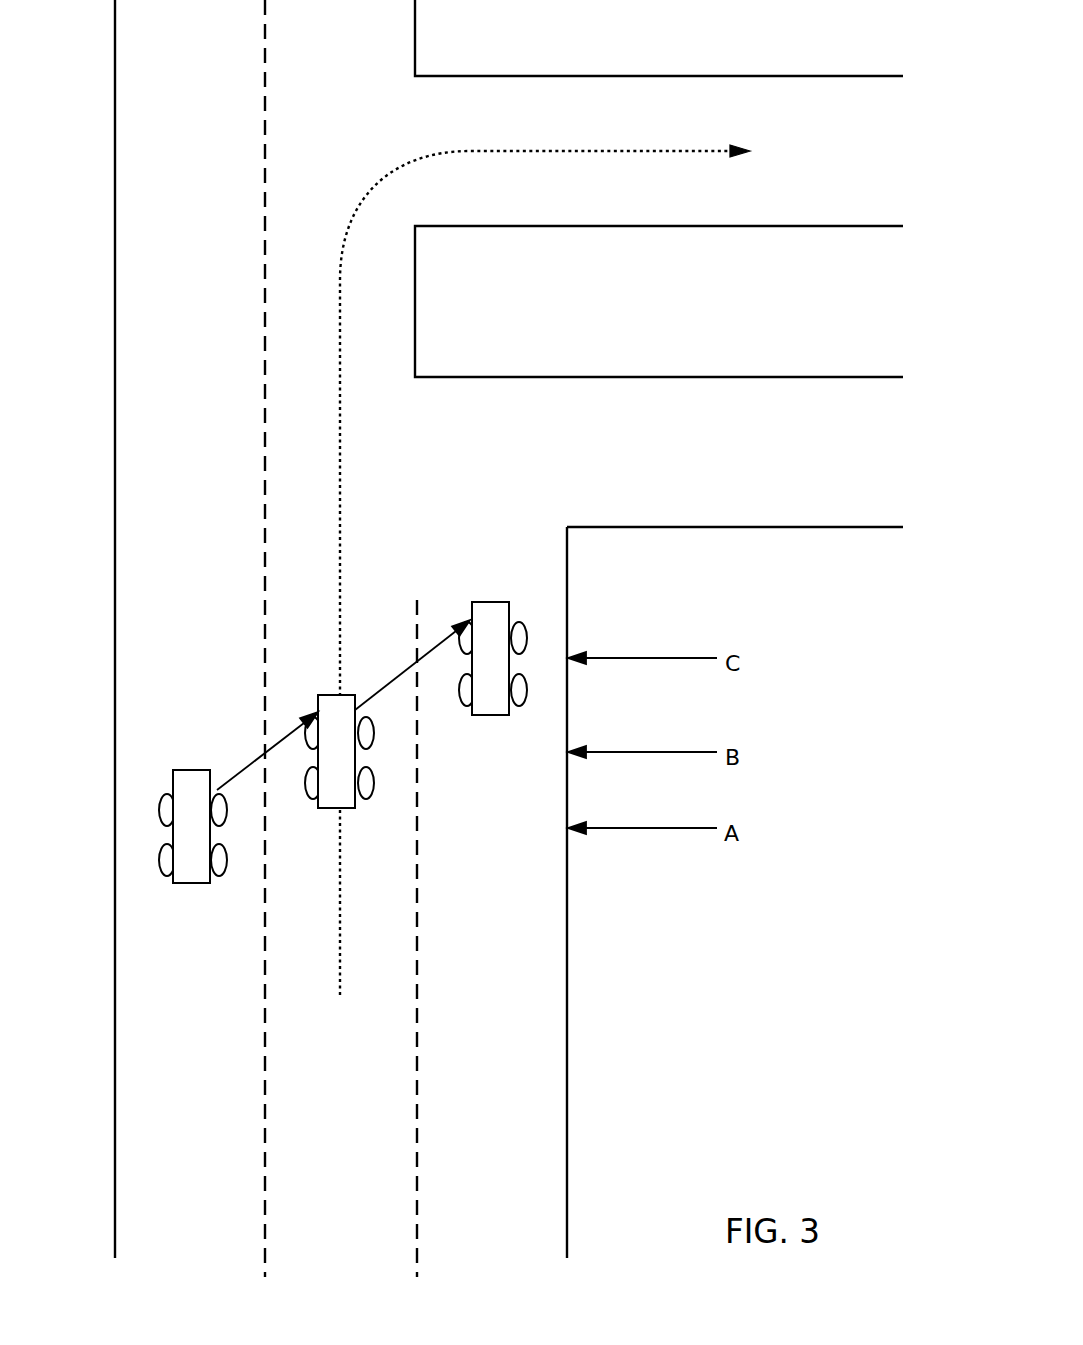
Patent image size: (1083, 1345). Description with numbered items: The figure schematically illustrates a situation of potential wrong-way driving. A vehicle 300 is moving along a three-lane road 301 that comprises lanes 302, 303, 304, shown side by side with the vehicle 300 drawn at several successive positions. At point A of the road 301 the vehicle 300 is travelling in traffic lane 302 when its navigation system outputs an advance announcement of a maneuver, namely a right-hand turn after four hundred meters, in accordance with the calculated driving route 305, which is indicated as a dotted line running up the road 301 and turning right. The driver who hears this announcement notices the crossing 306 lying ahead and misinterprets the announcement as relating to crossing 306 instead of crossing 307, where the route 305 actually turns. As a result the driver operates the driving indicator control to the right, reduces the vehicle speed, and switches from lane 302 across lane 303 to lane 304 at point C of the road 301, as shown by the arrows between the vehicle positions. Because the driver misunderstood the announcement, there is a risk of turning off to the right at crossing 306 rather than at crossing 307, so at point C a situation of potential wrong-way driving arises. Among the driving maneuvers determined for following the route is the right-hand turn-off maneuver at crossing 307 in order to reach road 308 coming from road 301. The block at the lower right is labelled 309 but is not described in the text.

The vehicle 300 is at (180, 820).
The road 301 is at (567, 790).
The traffic lane 302 is at (218, 1252).
The lane 303 is at (369, 1252).
The lane 304 is at (517, 1252).
The calculated driving route 305 is at (563, 152).
The crossing 306 is at (430, 501).
The crossing 307 is at (367, 165).
The road 308 is at (490, 75).
The second building / obstacle 309 is at (752, 528).